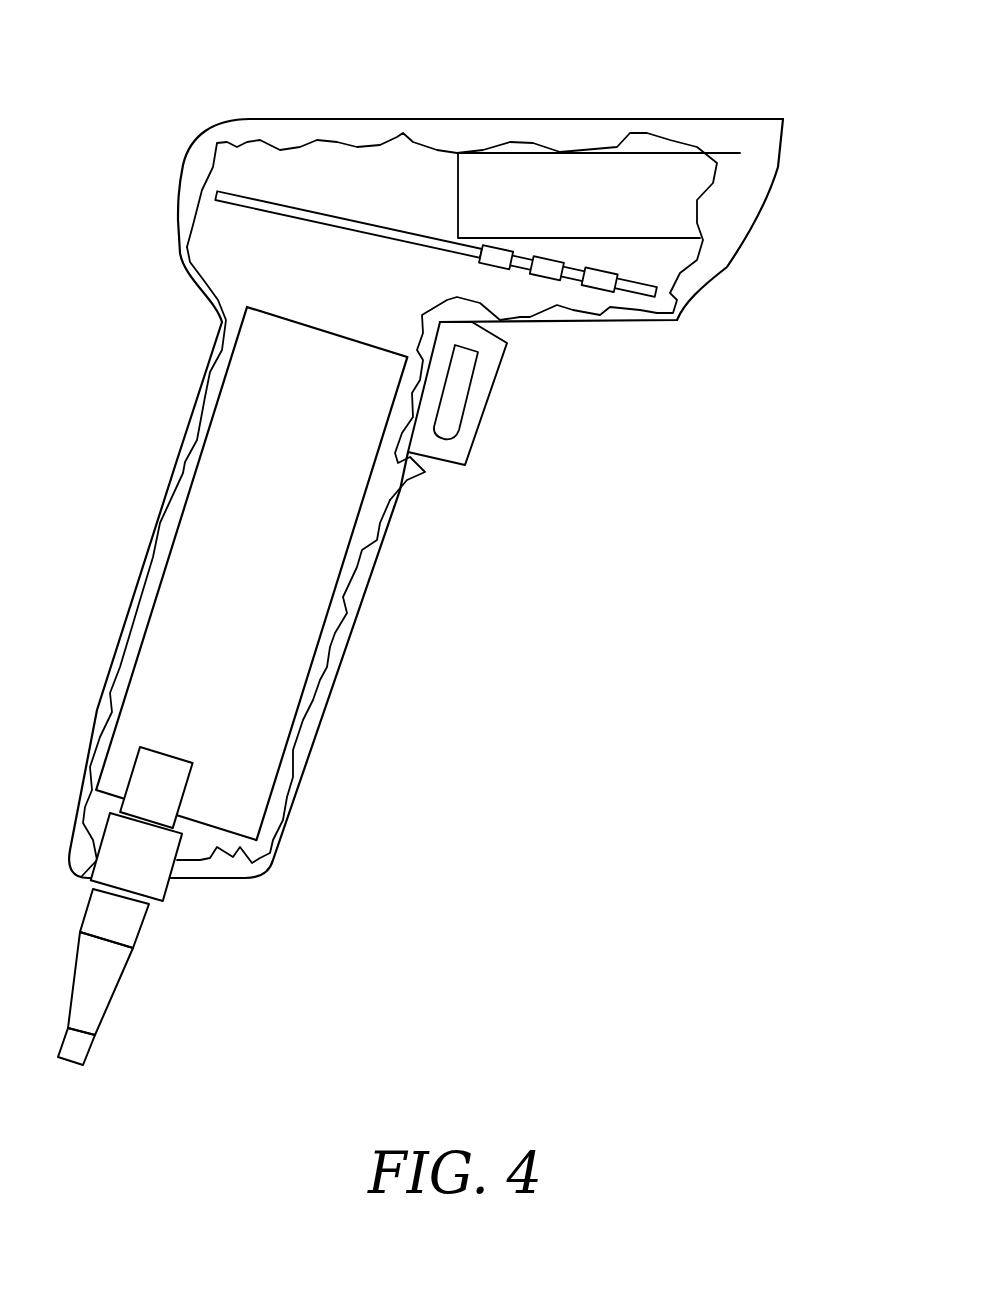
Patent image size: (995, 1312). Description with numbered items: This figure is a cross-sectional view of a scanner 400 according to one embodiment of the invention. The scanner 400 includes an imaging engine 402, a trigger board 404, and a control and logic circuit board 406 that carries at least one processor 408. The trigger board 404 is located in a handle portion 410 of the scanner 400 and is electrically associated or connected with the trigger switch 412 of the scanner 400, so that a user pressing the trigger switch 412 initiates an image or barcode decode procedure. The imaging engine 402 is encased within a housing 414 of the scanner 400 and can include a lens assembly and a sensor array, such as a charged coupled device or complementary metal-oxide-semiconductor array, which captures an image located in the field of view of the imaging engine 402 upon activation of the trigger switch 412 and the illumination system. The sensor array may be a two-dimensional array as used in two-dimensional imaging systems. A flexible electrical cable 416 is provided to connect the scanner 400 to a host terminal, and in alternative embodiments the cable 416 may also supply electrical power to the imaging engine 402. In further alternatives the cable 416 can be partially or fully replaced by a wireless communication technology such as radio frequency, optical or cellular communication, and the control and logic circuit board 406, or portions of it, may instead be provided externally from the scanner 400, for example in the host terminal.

The handheld scanner 400 is at (420, 537).
The imaging engine 402 is at (668, 153).
The handle or trigger board 404 is at (305, 638).
The circuit board 406 is at (260, 188).
The component board 408 is at (602, 290).
The handle housing 410 is at (293, 785).
The trigger 412 is at (473, 418).
The housing head 414 is at (490, 114).
The cable connector 416 is at (112, 993).